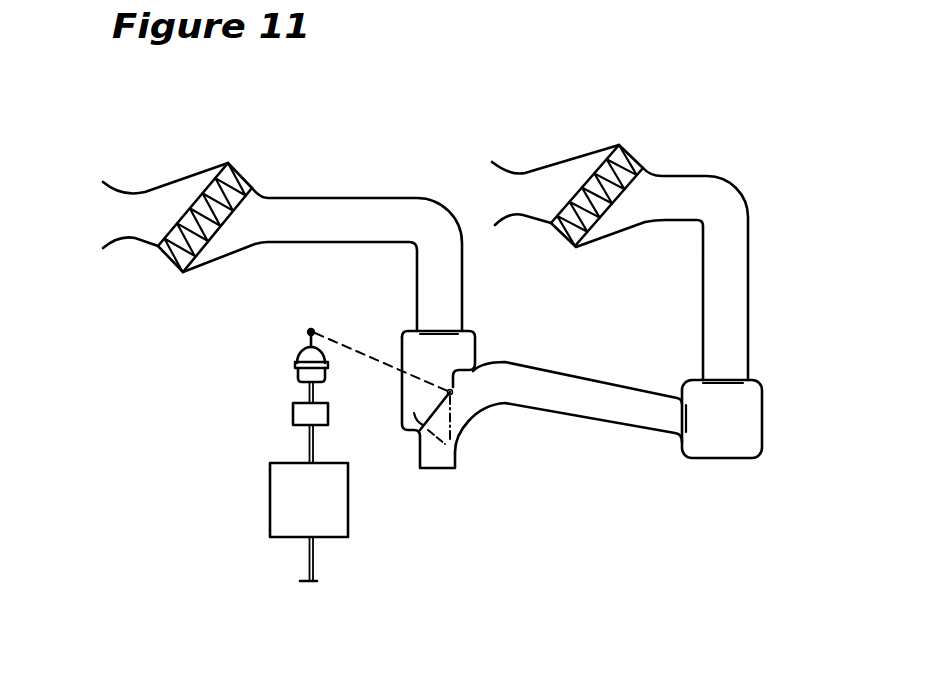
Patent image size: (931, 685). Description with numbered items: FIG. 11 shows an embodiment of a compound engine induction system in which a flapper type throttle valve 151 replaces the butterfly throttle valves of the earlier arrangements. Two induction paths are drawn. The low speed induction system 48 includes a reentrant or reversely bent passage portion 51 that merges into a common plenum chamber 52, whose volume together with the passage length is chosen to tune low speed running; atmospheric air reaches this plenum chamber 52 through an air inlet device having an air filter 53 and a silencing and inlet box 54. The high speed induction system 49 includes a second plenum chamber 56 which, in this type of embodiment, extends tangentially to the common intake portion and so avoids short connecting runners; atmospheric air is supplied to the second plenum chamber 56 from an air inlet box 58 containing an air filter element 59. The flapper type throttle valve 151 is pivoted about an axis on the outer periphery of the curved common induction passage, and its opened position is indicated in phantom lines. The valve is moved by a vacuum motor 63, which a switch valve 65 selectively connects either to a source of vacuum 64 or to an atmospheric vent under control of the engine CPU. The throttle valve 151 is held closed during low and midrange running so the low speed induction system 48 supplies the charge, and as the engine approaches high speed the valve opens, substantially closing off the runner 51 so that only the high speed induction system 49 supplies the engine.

The low speed induction system 48 is at (772, 256).
The high speed induction system 49 is at (386, 186).
The reentrant or reversely bent portion 51 is at (637, 428).
The plenum chamber 52 is at (763, 407).
The air filter 53 is at (638, 159).
The silencing and inlet box 54 is at (578, 263).
The second plenum chamber 56 is at (477, 346).
The air inlet box 58 is at (161, 257).
The air filter element 59 is at (256, 184).
The vacuum motor 63 is at (292, 368).
The source of vacuum 64 is at (270, 502).
The switch valve 65 is at (292, 410).
The flapper type throttle valve 151 is at (413, 411).